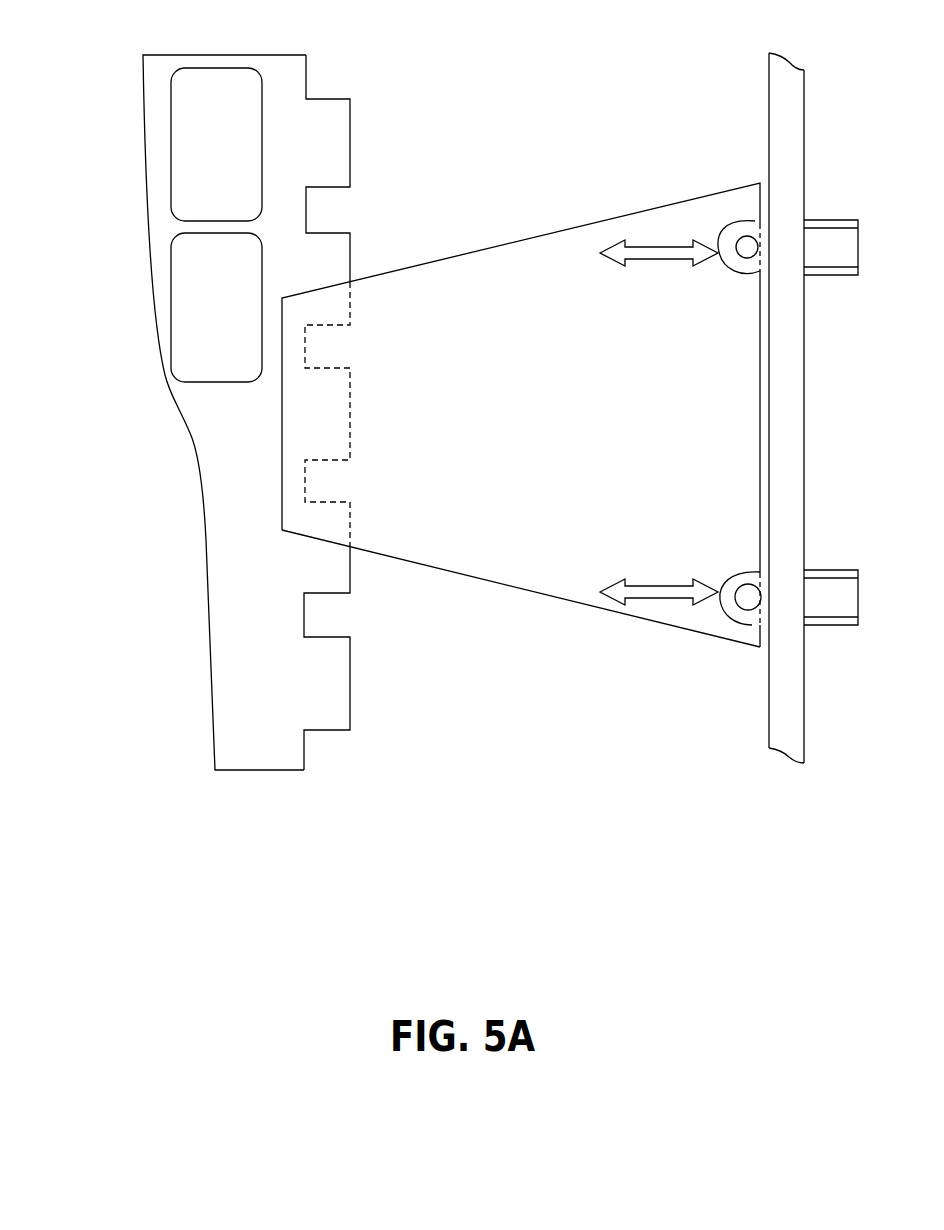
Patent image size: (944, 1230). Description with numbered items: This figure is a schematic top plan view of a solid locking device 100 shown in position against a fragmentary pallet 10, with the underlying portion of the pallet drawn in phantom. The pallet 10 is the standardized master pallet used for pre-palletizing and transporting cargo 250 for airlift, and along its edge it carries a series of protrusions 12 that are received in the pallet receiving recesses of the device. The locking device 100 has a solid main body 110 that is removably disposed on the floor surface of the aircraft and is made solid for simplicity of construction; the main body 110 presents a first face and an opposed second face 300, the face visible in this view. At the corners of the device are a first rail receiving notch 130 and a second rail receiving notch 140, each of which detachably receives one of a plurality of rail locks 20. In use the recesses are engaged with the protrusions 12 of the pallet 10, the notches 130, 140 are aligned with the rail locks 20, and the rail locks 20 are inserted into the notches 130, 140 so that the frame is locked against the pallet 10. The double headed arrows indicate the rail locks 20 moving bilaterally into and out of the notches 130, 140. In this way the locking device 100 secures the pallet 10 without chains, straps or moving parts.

The 463L pallet 10 is at (238, 570).
The protrusion 12 is at (323, 130).
The cargo 250 is at (193, 132).
The second face 300 is at (490, 477).
The main body 110 is at (480, 562).
The locking device 100 is at (523, 683).
The first rail receiving notch 130 is at (722, 243).
The second rail receiving notch 140 is at (731, 605).
The rail lock 20 is at (755, 221).